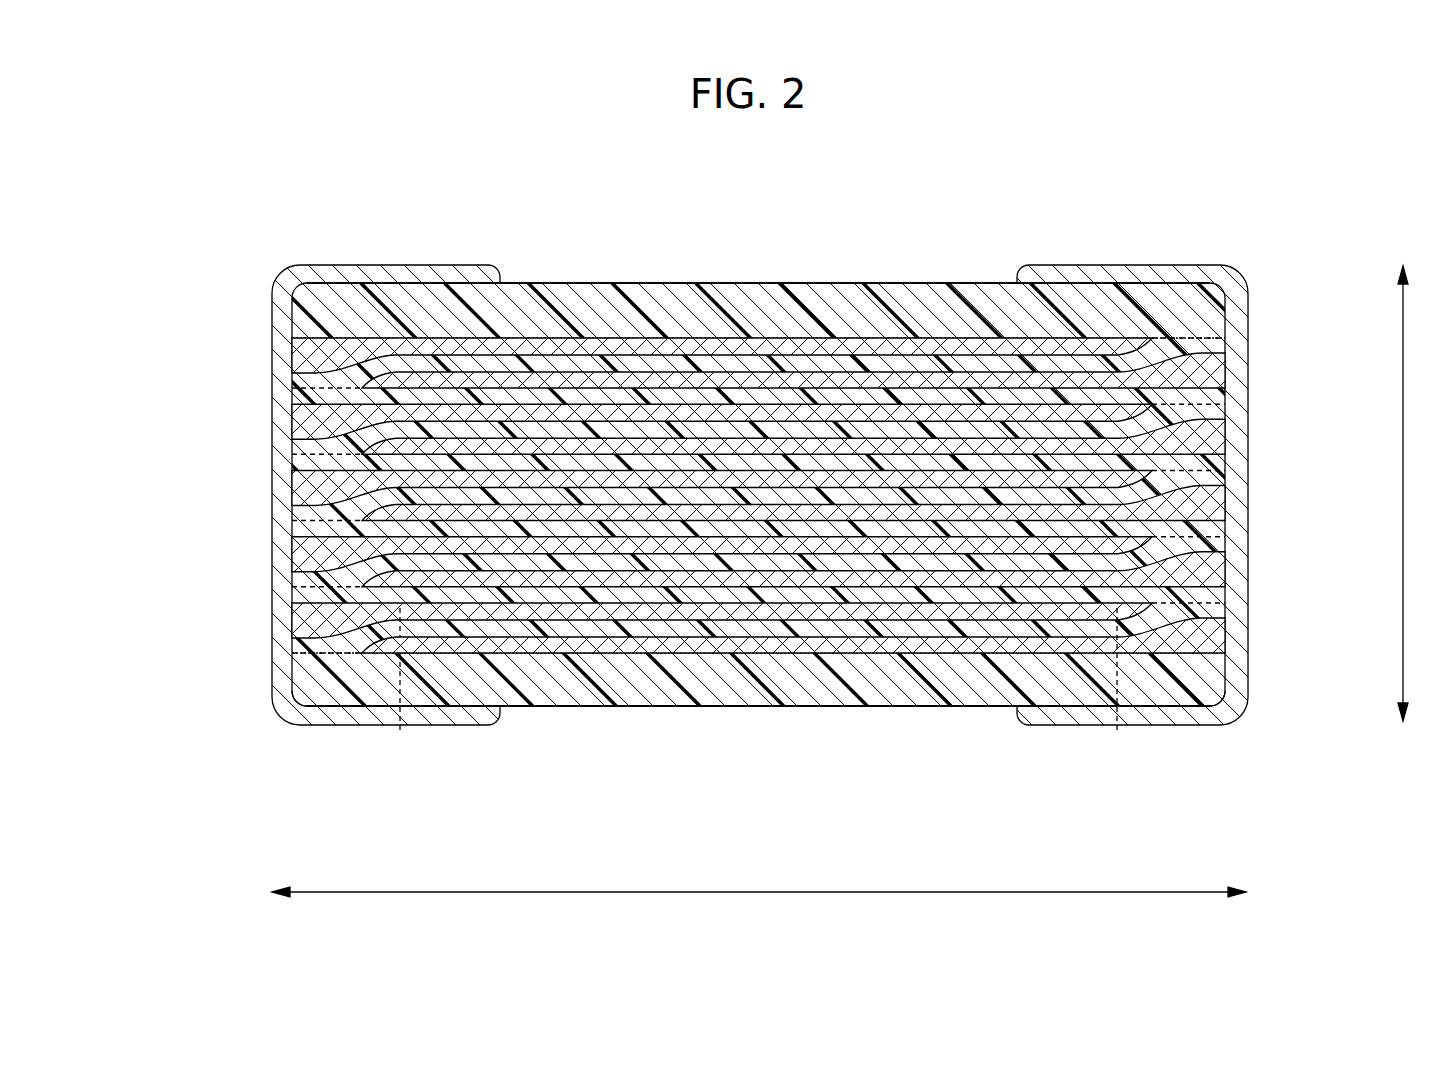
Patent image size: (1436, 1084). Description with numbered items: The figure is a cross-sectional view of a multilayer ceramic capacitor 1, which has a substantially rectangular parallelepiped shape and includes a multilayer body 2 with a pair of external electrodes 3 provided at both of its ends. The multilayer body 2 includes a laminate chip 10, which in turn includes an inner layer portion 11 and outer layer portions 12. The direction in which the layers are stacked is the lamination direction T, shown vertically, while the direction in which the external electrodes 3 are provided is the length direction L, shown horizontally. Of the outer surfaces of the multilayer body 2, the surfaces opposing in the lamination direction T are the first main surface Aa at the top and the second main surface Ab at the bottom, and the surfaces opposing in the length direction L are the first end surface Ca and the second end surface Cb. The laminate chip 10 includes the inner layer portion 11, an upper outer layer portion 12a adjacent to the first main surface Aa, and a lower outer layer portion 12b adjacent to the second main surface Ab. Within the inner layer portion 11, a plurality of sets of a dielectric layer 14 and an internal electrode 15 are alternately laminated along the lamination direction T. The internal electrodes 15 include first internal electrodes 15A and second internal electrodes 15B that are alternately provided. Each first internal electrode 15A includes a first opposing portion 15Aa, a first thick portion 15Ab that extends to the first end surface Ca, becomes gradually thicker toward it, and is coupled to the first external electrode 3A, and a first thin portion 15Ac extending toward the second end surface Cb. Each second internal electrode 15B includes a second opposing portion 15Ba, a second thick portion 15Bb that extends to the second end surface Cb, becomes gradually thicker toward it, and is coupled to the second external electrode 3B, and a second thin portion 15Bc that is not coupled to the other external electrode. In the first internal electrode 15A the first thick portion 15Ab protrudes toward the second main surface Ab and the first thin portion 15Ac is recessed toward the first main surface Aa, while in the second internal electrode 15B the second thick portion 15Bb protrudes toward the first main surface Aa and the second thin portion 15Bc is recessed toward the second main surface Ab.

The multilayer ceramic capacitor 1 is at (718, 466).
The multilayer body 2 is at (718, 495).
The laminate chip 10 is at (718, 499).
The external electrodes 3 is at (718, 456).
The first external electrode 3A is at (302, 275).
The second external electrode 3B is at (1215, 267).
The first main surface Aa is at (758, 283).
The second main surface Ab is at (760, 706).
The inner layer portion 11 is at (718, 545).
The outer layer portions 12 is at (680, 517).
The upper outer layer portion 12a is at (317, 312).
The lower outer layer portion 12b is at (317, 680).
The dielectric layer 14 is at (315, 382).
The internal electrode 15 is at (718, 545).
The first internal electrode 15A is at (718, 545).
The second internal electrode 15B is at (718, 545).
The first opposing portion 15Aa is at (470, 613).
The first thick portion 15Ab is at (343, 618).
The first thin portion 15Ac is at (1130, 610).
The second opposing portion 15Ba is at (1047, 643).
The second thick portion 15Bb is at (1197, 637).
The second thin portion 15Bc is at (390, 643).
The first end surface Ca is at (292, 673).
The second end surface Cb is at (1230, 668).
The lamination direction T is at (1415, 493).
The length direction L is at (759, 909).